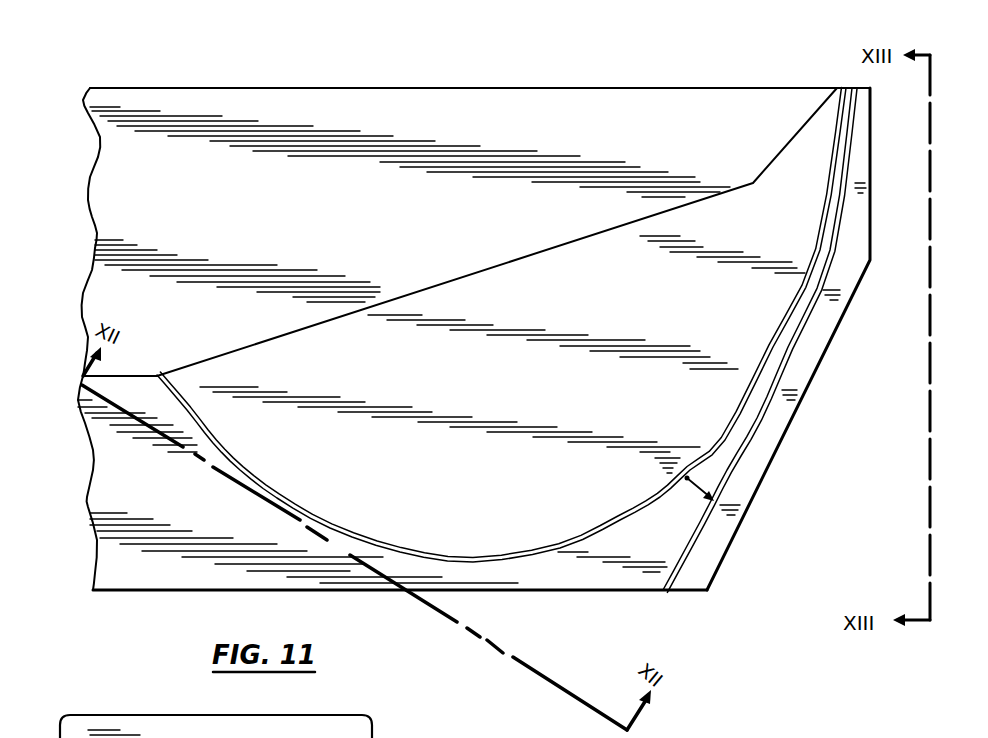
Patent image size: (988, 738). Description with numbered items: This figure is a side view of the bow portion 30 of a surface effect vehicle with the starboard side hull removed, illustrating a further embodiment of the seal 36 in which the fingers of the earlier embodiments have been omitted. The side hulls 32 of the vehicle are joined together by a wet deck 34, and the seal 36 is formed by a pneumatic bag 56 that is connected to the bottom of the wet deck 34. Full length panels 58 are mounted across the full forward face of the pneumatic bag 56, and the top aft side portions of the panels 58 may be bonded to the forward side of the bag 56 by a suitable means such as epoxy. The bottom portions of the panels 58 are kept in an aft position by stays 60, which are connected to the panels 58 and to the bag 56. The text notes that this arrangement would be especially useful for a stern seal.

The bow portion 30 is at (571, 74).
The side hulls 32 is at (112, 465).
The wet deck 34 is at (105, 194).
The seal 36 is at (830, 404).
The pneumatic bag 56 is at (768, 345).
The full length panels 58 is at (750, 446).
The stays 60 is at (702, 490).